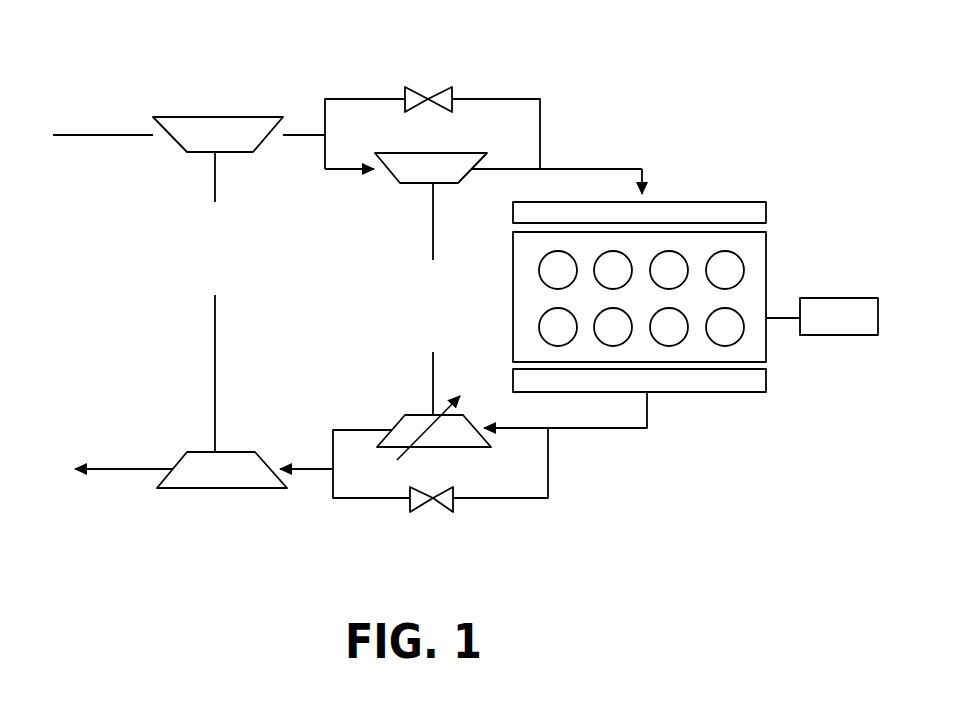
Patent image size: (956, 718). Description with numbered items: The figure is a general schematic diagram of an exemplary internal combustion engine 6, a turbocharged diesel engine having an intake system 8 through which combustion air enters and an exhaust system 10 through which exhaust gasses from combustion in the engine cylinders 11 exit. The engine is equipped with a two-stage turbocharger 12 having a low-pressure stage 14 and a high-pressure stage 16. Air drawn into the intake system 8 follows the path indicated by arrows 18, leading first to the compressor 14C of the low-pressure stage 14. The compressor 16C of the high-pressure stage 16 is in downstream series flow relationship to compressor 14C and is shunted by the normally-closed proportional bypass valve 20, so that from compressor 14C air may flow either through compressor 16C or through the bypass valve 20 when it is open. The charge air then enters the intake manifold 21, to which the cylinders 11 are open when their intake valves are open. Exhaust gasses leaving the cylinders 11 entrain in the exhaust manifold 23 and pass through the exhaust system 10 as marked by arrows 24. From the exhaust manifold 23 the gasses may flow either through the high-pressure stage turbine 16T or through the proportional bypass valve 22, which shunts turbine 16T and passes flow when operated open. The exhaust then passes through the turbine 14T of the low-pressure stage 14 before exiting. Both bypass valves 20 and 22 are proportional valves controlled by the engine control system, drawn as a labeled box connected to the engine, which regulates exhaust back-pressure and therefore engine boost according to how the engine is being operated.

The internal combustion engine 6 is at (787, 86).
The intake system 8 is at (603, 157).
The exhaust system 10 is at (618, 436).
The engine cylinders 11 is at (746, 306).
The two-stage turbocharger 12 is at (429, 230).
The low-pressure stage 14 is at (214, 296).
The compressor 14C is at (213, 115).
The turbine 14T is at (228, 489).
The high-pressure stage 16 is at (398, 306).
The compressor 16C is at (443, 186).
The high-pressure stage turbine 16T is at (404, 416).
The arrows 18 is at (164, 138).
The bypass valve 20 is at (447, 78).
The intake manifold 21 is at (733, 202).
The bypass valve 22 is at (466, 512).
The exhaust manifold 23 is at (712, 393).
The arrows 24 is at (483, 424).